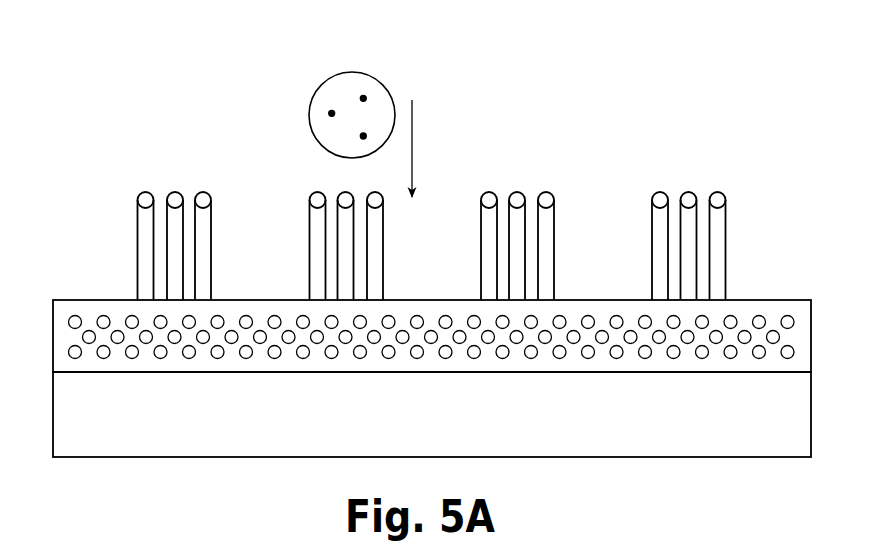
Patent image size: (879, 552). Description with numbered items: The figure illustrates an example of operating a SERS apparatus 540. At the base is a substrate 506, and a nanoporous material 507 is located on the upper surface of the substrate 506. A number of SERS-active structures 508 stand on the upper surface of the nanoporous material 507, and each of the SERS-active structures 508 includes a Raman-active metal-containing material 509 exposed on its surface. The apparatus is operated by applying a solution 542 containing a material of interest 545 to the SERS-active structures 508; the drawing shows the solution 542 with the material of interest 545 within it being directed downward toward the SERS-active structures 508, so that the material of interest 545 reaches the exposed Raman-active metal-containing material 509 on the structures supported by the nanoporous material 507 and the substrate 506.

The SERS apparatus 540 is at (116, 101).
The solution 542 is at (322, 83).
The material of interest 545 is at (341, 112).
The Raman-active metal-containing material 509 is at (364, 186).
The SERS-active structures 508 is at (366, 267).
The nanoporous material 507 is at (53, 321).
The substrate 506 is at (112, 418).